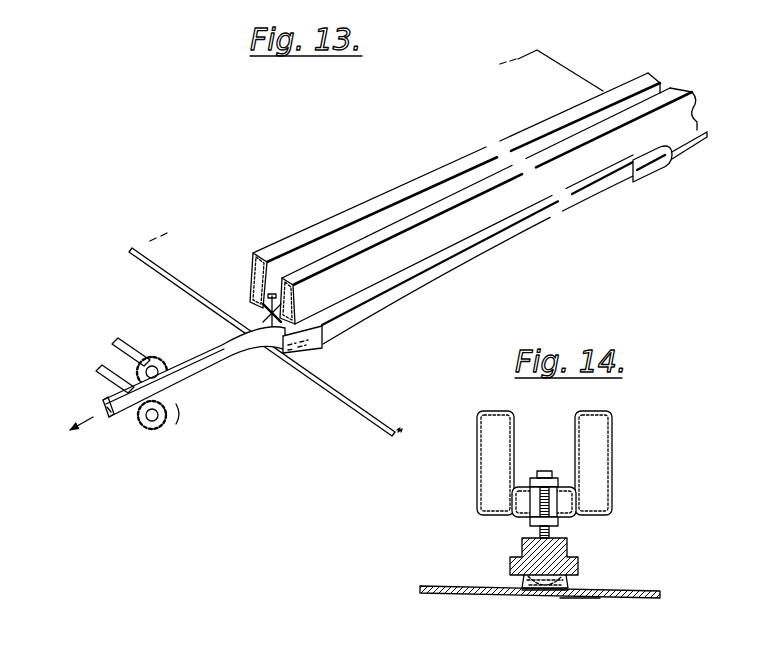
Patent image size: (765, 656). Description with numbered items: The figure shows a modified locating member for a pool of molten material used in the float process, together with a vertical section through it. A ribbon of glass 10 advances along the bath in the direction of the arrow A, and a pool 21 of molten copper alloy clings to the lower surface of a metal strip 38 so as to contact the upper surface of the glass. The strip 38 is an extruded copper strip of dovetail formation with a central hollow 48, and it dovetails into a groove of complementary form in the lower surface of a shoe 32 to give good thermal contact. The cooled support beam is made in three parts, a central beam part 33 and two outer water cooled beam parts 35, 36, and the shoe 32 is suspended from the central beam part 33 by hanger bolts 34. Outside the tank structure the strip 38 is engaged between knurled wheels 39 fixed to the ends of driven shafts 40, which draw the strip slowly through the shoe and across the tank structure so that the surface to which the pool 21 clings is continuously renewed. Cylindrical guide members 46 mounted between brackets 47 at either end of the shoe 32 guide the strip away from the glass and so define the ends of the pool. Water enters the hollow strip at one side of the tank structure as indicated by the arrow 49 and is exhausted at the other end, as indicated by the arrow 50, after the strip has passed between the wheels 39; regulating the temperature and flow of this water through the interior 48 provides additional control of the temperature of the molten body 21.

In FIG. 13, the direction of advance of the ribbon of glass A is at (460, 64).
In FIG. 13, the ribbon of glass 10 is at (158, 271).
In FIG. 14, the ribbon of glass 10 is at (480, 595).
In FIG. 14, the pool of molten material 21 is at (578, 596).
In FIG. 14, the shoe 32 is at (578, 564).
In FIG. 13, the central beam part 33 is at (262, 302).
In FIG. 14, the central beam part 33 is at (529, 474).
In FIG. 14, the hanger bolts 34 is at (556, 529).
In FIG. 13, the cooled beam part 35 is at (288, 243).
In FIG. 14, the cooled beam part 35 is at (498, 411).
In FIG. 13, the cooled beam part 36 is at (362, 241).
In FIG. 14, the cooled beam part 36 is at (597, 411).
In FIG. 14, the metal strip 38 is at (524, 583).
In FIG. 13, the knurled wheels 39 is at (168, 404).
In FIG. 13, the shafts 40 is at (97, 376).
In FIG. 13, the guide members 46 is at (276, 356).
In FIG. 13, the brackets 47 is at (305, 341).
In FIG. 14, the central hollow 48 is at (528, 598).
In FIG. 13, the arrow indicating water inflow 49 is at (706, 121).
In FIG. 13, the arrow indicating water exhaust 50 is at (100, 436).